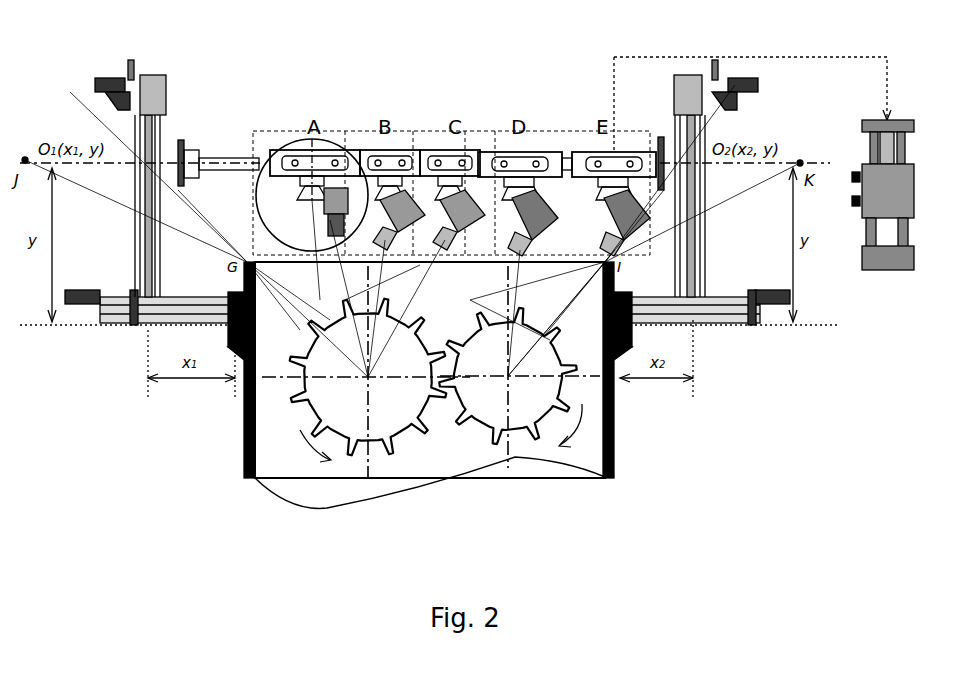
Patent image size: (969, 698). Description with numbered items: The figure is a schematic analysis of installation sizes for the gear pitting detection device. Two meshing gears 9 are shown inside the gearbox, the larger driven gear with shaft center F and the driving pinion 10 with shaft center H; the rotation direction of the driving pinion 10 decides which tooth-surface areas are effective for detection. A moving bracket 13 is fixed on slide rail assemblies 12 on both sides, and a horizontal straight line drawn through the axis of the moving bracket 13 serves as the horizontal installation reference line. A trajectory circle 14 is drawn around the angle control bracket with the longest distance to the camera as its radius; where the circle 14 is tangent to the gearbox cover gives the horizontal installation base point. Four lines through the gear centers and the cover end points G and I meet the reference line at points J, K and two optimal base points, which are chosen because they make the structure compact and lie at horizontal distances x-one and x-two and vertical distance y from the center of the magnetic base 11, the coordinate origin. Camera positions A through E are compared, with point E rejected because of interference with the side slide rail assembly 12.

The meshing gear 9 is at (335, 422).
The driving pinion 10 is at (500, 418).
The magnetic base 11 is at (625, 343).
The slide rail assembly 12 is at (693, 310).
The moving bracket 13 is at (520, 163).
The trajectory circle 14 is at (293, 137).